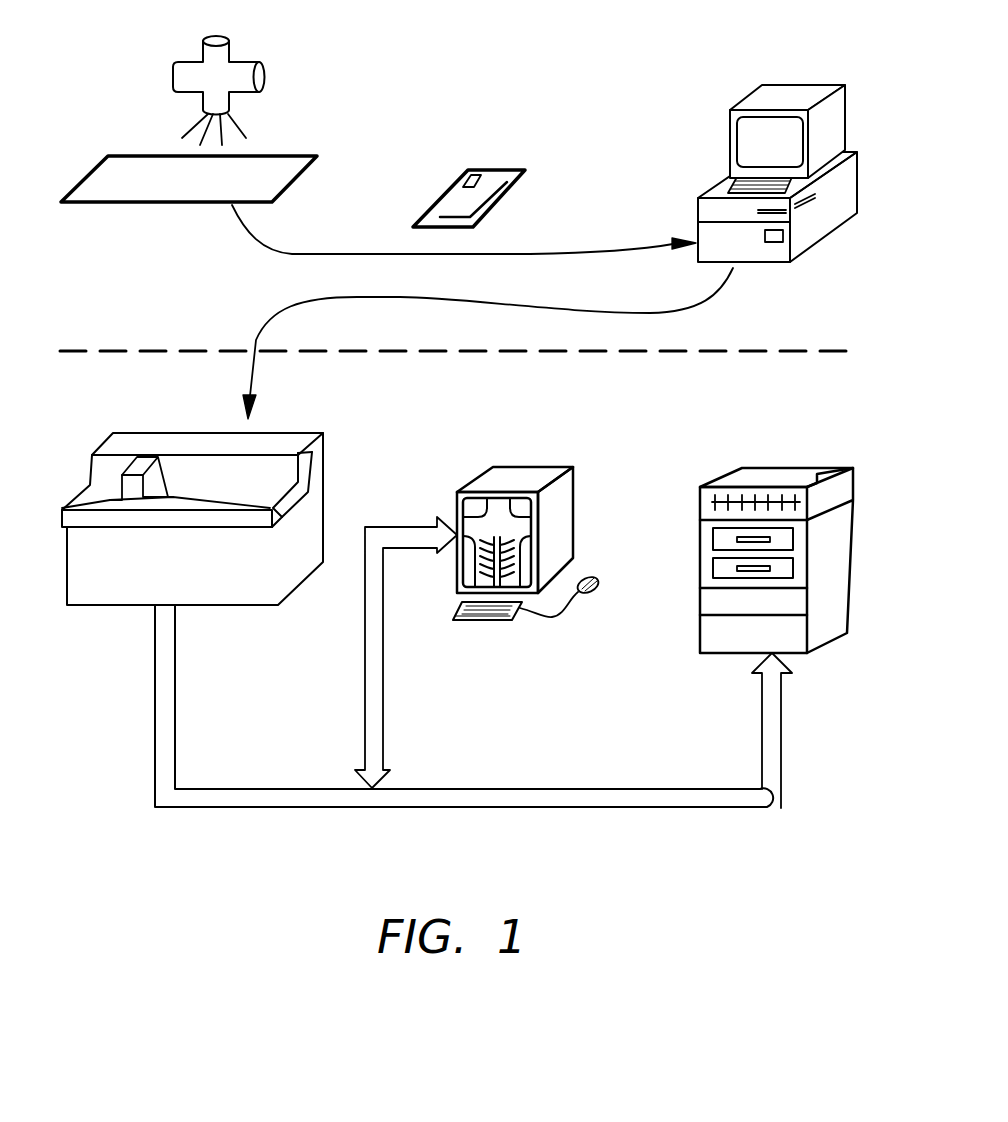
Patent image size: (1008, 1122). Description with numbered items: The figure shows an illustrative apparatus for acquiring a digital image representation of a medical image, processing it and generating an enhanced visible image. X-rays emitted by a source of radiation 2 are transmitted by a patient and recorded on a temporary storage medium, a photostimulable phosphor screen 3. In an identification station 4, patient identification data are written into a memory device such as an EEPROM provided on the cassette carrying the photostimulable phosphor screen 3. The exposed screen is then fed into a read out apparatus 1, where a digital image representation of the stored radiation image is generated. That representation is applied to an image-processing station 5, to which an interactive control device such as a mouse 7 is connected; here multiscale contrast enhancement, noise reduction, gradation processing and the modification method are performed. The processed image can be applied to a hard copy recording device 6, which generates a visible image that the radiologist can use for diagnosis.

The read out apparatus 1 is at (96, 490).
The source of radiation 2 is at (217, 78).
The photostimulable phosphor screen 3 is at (497, 178).
The identification station 4 is at (810, 230).
The image-processing station 5 is at (563, 492).
The hard copy recording device 6 is at (820, 625).
The mouse 7 is at (600, 582).